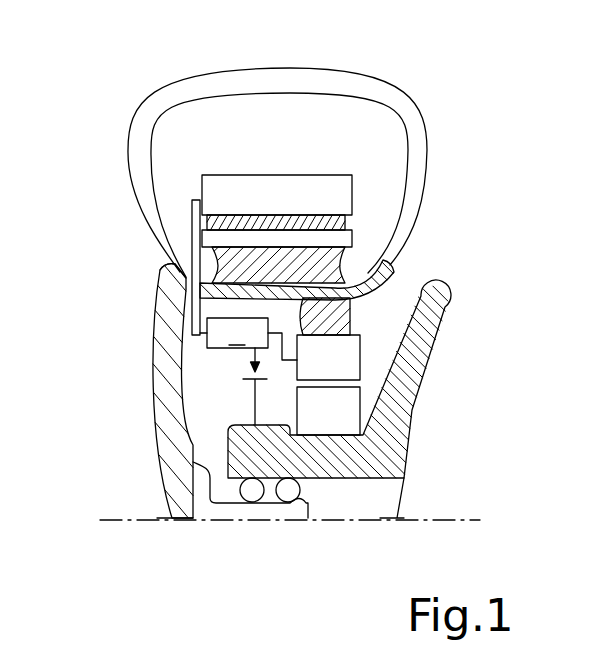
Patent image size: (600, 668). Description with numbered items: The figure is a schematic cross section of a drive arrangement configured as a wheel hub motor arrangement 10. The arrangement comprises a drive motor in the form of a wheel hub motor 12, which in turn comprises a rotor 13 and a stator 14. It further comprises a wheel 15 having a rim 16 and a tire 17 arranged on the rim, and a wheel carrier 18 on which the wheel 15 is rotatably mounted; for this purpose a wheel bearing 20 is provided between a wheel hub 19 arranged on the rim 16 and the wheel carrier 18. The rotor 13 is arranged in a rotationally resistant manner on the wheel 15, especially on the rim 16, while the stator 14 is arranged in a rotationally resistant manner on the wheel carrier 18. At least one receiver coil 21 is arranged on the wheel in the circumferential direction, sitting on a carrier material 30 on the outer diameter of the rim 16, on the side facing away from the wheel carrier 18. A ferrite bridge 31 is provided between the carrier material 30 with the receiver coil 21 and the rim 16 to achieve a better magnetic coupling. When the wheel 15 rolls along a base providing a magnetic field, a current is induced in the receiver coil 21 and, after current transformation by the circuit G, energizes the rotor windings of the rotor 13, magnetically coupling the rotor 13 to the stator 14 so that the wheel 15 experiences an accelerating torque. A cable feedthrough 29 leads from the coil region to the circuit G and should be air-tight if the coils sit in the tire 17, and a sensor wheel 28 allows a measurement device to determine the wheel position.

The wheel hub motor arrangement 10 is at (116, 72).
The wheel hub motor 12 is at (458, 248).
The rotor 13 is at (350, 350).
The stator 14 is at (350, 402).
The wheel 15 is at (102, 143).
The rim 16 is at (175, 450).
The tire 17 is at (143, 178).
The wheel carrier 18 is at (393, 448).
The wheel hub 19 is at (226, 510).
The wheel bearing 20 is at (288, 492).
The receiver coil 21 is at (361, 183).
The sensor wheel 28 is at (252, 398).
The cable feedthrough 29 is at (160, 292).
The carrier material 30 is at (352, 193).
The ferrite bridge 31 is at (352, 238).